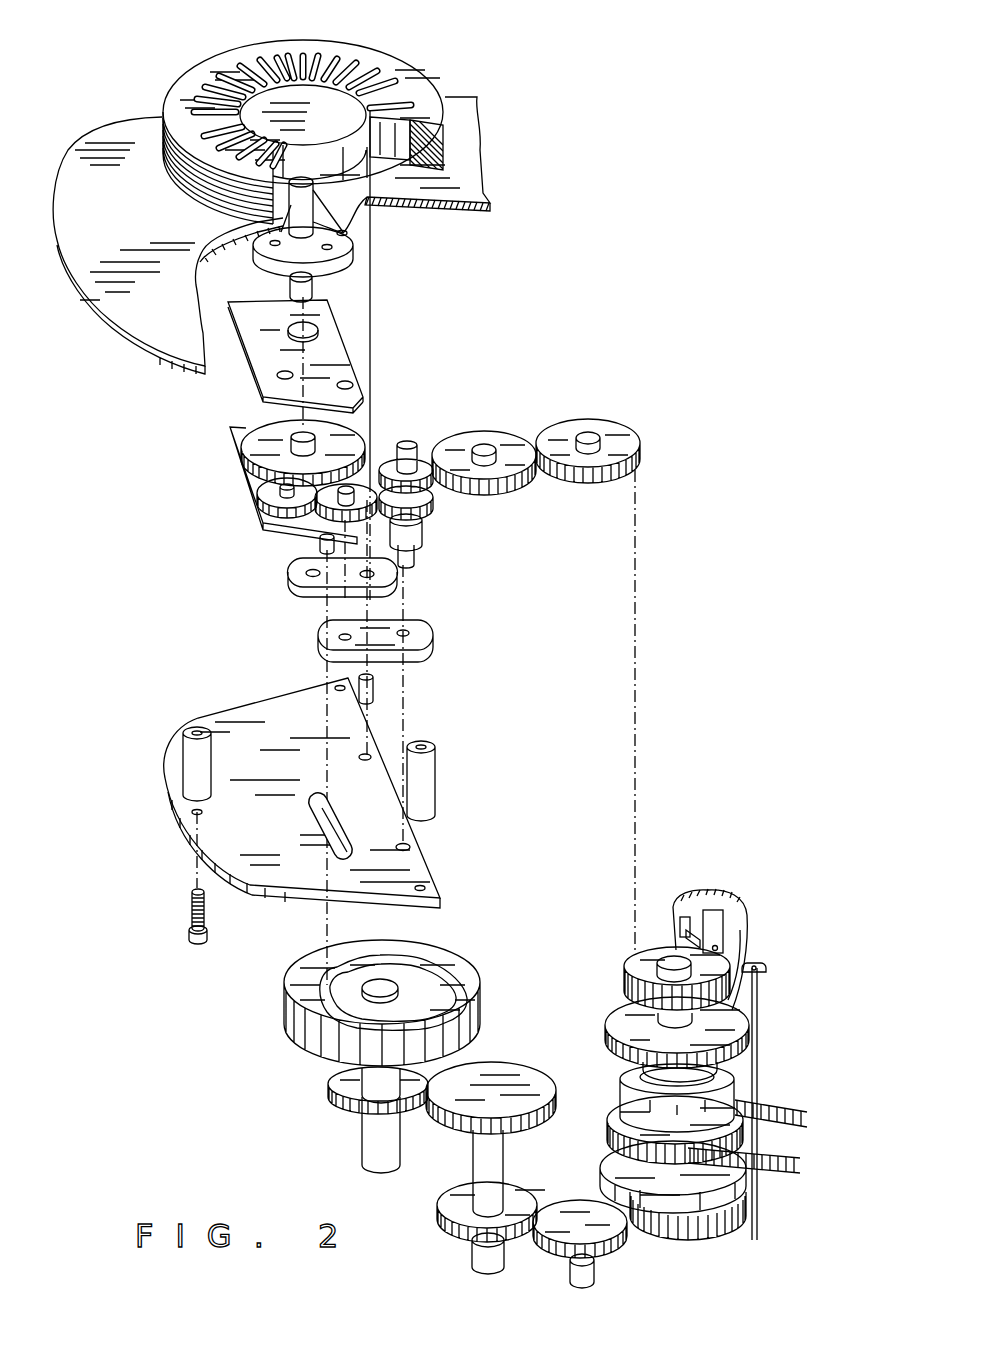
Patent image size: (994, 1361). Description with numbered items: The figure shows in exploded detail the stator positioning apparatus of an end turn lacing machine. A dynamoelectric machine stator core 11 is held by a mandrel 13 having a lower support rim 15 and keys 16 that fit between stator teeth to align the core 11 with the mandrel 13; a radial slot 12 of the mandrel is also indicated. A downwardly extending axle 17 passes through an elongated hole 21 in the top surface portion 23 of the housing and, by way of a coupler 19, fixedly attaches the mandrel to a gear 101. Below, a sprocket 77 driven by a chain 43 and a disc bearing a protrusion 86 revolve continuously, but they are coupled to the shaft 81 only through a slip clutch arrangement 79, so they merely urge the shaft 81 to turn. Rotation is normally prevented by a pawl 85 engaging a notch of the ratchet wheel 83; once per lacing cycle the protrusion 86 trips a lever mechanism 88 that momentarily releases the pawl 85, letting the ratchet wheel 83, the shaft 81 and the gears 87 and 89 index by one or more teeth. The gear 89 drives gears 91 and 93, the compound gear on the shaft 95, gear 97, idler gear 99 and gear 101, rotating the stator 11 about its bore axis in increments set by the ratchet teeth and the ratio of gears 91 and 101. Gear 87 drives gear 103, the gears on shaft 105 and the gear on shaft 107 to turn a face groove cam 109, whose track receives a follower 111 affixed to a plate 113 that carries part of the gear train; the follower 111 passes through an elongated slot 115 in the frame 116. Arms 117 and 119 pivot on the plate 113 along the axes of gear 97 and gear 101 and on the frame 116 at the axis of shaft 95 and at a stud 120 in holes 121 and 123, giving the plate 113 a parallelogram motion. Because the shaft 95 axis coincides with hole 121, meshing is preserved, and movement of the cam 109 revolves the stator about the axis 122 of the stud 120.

The stator core 11 is at (358, 56).
The radial slot 12 is at (403, 105).
The mandrel 13 is at (297, 95).
The lower support rim 15 is at (358, 173).
The keys 16 is at (342, 157).
The axle 17 is at (265, 262).
The coupler 19 is at (285, 272).
The elongated hole 21 is at (335, 262).
The top surface portion of the housing 23 is at (462, 103).
The chain 43 is at (763, 1105).
The sprocket 77 is at (622, 1120).
The slip clutch arrangement 79 is at (625, 1090).
The shaft 81 is at (623, 1013).
The ratchet wheel 83 is at (622, 1002).
The pawl 85 is at (735, 960).
The disc protrusion 86 is at (737, 1200).
The gear 87 is at (702, 1233).
The lever mechanism 88 is at (757, 1222).
The gear 89 is at (637, 965).
The gear 91 is at (565, 425).
The gear 93 is at (465, 440).
The shaft of compound gear 95 is at (420, 450).
The gear 97 is at (357, 487).
The idler gear 99 is at (262, 483).
The gear 101 is at (280, 425).
The gear 103 is at (575, 1212).
The shaft 105 is at (483, 1162).
The shaft 107 is at (380, 1148).
The face groove cam 109 is at (412, 972).
The follower 111 is at (320, 543).
The plate 113 is at (230, 434).
The elongated slot 115 is at (318, 808).
The machine frame 116 is at (262, 712).
The arm 117 is at (422, 632).
The arm 119 is at (298, 572).
The stud 120 is at (375, 690).
The hole 121 is at (412, 845).
The axis of stud 122 is at (372, 310).
The hole 123 is at (370, 752).